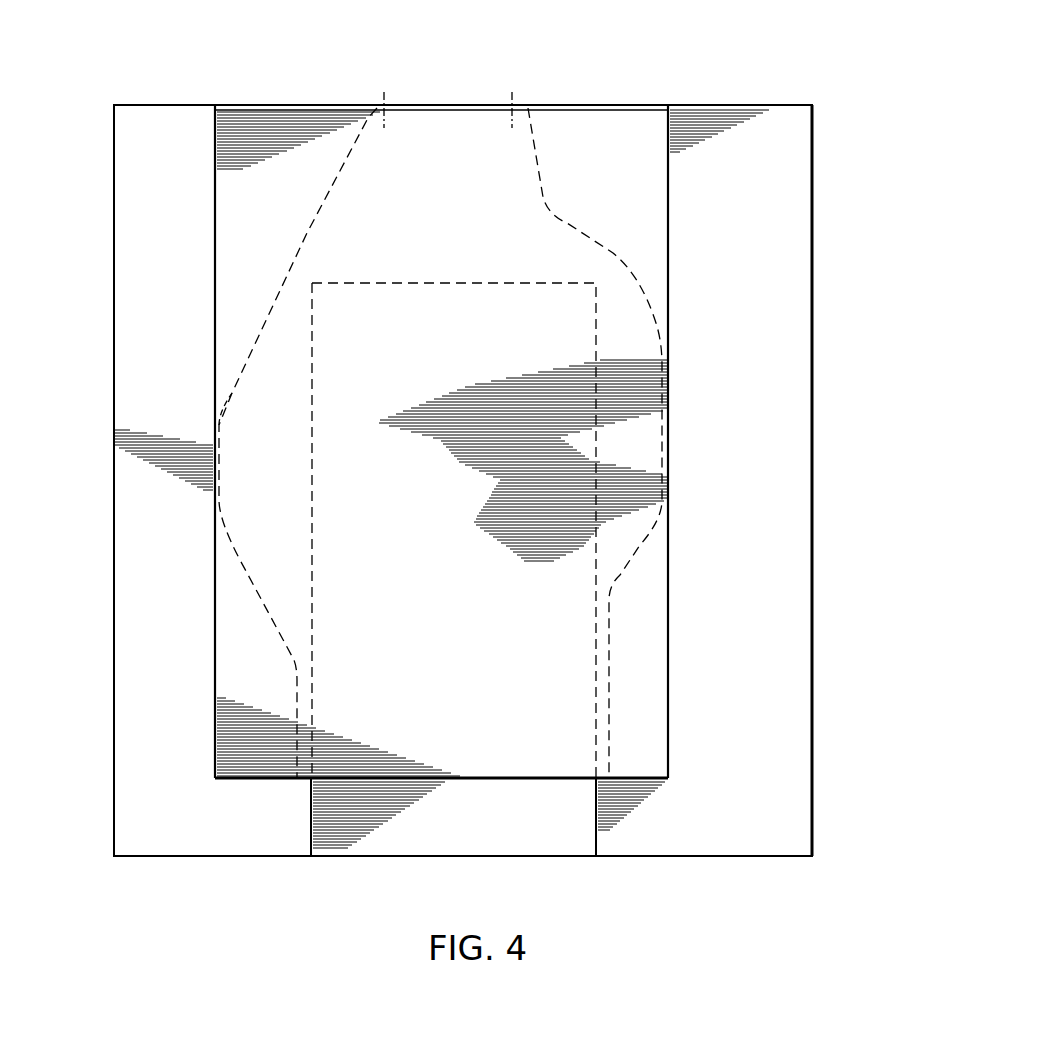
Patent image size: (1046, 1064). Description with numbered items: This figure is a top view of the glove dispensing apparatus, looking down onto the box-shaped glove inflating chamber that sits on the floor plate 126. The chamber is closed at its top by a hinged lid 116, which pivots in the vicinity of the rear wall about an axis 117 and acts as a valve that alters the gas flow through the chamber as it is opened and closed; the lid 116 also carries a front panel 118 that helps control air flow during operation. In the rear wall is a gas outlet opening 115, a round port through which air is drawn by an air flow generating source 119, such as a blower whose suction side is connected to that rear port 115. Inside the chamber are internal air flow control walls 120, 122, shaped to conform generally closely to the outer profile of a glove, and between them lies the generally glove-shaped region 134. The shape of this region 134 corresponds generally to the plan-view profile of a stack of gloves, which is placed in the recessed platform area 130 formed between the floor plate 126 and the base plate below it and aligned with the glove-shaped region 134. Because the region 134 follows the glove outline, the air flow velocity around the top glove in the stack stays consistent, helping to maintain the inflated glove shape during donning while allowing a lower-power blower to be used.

The gas outlet opening 115 is at (487, 97).
The hinged lid 116 is at (264, 138).
The axis 117 is at (633, 105).
The front panel 118 is at (543, 783).
The air flow generating source 119 is at (512, 118).
The internal air flow control wall 120 is at (308, 233).
The internal air flow control wall 122 is at (580, 232).
The floor plate 126 is at (112, 152).
The recessed platform area 130 is at (491, 828).
The generally glove-shaped region 134 is at (250, 412).